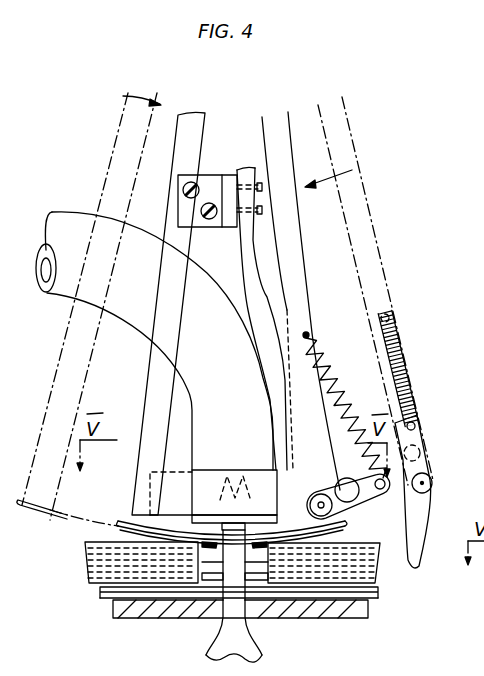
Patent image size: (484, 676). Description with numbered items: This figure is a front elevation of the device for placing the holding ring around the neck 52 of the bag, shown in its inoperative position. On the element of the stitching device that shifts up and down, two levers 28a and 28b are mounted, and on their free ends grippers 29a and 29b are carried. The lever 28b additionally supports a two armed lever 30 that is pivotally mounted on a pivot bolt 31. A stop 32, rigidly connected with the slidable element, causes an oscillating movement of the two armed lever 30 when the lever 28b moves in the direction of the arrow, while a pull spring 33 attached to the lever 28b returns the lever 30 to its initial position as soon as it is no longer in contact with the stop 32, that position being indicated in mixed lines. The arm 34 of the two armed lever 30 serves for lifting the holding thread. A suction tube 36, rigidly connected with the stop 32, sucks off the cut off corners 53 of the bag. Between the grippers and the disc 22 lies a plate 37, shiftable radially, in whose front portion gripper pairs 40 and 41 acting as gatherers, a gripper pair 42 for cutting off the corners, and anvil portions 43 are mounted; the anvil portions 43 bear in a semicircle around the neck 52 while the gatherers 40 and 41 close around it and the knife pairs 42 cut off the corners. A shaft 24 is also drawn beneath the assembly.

The disc 22 is at (100, 590).
The shaft 24 is at (234, 631).
The lever 28a is at (157, 374).
The lever 28b is at (378, 298).
The gripper 29a is at (66, 512).
The gripper 29b is at (428, 491).
The two armed lever 30 is at (307, 301).
The pivot bolt 31 is at (343, 504).
The stop 32 is at (306, 450).
The pull spring 33 is at (409, 381).
The arm 34 is at (243, 510).
The suction tube 36 is at (190, 402).
The plate 37 is at (86, 563).
The gripper pair 40 is at (215, 557).
The gripper pair 41 is at (217, 575).
The gripper pair for cutting off the corners 42 is at (143, 548).
The anvil portions 43 is at (172, 565).
The neck of the bag 52 is at (235, 565).
The cut off corners of the bag 53 is at (231, 503).